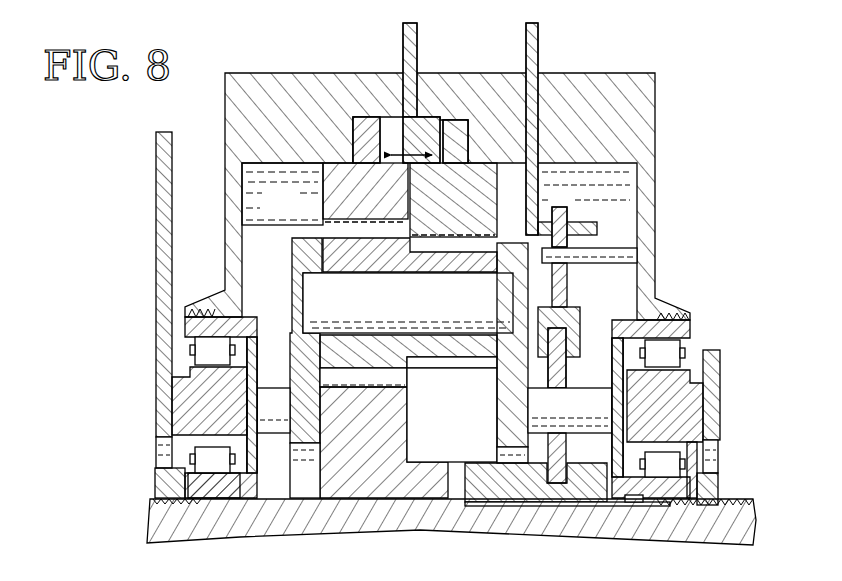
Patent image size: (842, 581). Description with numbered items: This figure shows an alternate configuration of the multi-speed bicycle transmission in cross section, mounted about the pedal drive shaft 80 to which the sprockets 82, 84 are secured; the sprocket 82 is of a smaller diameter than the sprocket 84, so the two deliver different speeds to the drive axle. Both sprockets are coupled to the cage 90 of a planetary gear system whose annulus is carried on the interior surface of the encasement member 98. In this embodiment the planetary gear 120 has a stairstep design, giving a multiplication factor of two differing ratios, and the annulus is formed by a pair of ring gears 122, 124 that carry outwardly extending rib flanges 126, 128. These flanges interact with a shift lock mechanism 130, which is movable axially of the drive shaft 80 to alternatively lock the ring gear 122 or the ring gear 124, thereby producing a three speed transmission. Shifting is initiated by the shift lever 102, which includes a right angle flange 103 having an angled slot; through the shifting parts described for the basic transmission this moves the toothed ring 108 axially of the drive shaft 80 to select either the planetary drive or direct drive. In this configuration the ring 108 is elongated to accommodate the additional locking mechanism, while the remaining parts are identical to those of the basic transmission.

The drive shaft 80 is at (647, 532).
The sprocket 82 is at (718, 375).
The sprocket 84 is at (160, 177).
The cage 90 is at (297, 257).
The encasement member 98 is at (678, 83).
The shift lever 102 is at (535, 65).
The right angle flange 103 is at (597, 228).
The ring 108 is at (528, 490).
The planetary gear 120 is at (327, 235).
The ring gear 122 is at (333, 190).
The ring gear 124 is at (473, 180).
The rib flange 126 is at (360, 125).
The rib flange 128 is at (455, 130).
The shift lock mechanism 130 is at (427, 130).